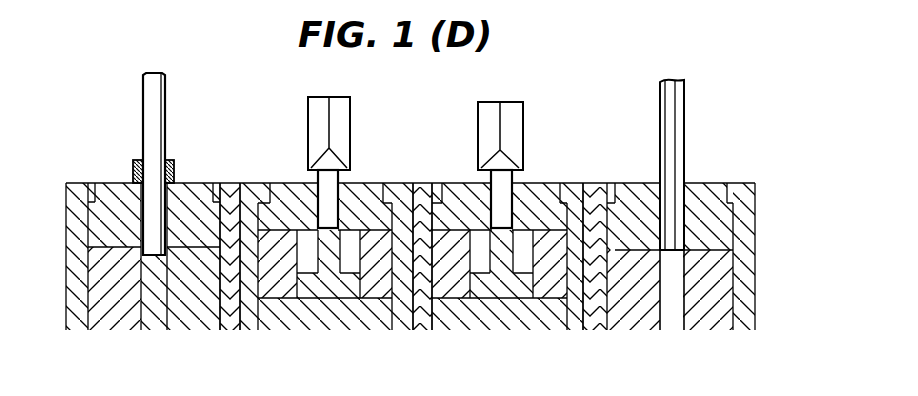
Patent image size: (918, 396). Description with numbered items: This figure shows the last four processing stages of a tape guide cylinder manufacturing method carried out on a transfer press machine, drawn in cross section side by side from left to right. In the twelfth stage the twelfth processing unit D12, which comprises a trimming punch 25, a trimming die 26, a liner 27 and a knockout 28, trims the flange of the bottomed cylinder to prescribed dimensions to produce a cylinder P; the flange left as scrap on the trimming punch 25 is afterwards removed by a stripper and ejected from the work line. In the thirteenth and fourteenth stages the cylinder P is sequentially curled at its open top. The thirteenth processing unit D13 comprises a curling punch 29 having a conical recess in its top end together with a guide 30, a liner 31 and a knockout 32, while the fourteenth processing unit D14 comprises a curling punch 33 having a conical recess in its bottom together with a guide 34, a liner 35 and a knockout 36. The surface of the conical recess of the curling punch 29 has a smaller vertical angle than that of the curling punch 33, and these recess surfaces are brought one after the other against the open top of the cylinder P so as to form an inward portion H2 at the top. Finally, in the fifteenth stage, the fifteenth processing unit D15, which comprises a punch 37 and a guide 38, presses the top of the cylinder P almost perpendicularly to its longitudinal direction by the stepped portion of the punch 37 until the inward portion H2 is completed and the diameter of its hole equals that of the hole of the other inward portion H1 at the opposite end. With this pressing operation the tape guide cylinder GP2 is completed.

The trimming punch 25 is at (148, 100).
The trimming die 26 is at (115, 181).
The liner 27 is at (100, 267).
The knockout 28 is at (178, 303).
The curling punch 29 is at (342, 112).
The guide 30 is at (368, 181).
The liner 31 is at (236, 300).
The knockout 32 is at (300, 308).
The curling punch 33 is at (520, 118).
The guide 34 is at (543, 181).
The liner 35 is at (426, 300).
The knockout 36 is at (493, 305).
The punch 37 is at (678, 128).
The guide 38 is at (708, 181).
The twelfth processing unit D12 is at (75, 181).
The thirteenth processing unit D13 is at (257, 181).
The fourteenth processing unit D14 is at (427, 181).
The fifteenth processing unit D15 is at (603, 181).
The inward portion H1 is at (133, 258).
The inward portion H2 is at (313, 167).
The cylinder P is at (135, 300).
The tape guide cylinder GP2 is at (705, 262).